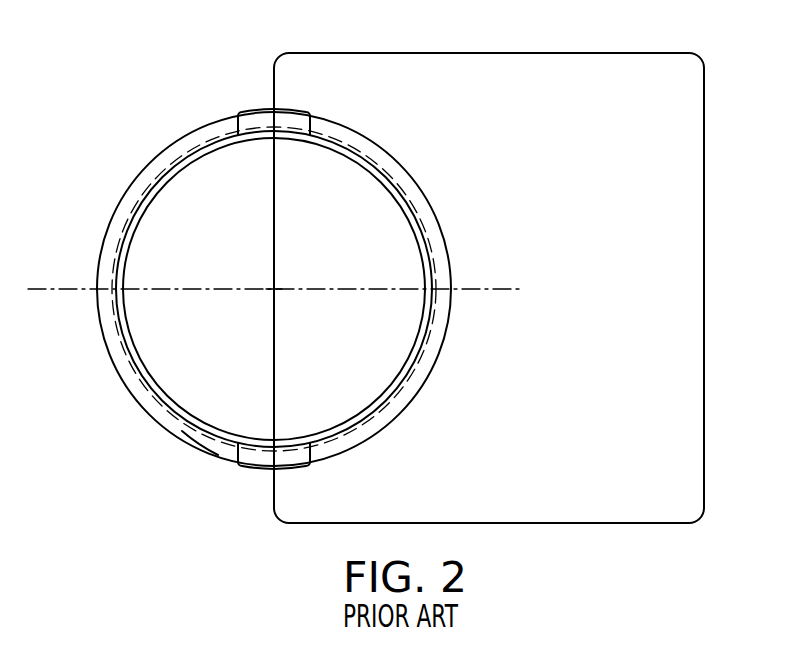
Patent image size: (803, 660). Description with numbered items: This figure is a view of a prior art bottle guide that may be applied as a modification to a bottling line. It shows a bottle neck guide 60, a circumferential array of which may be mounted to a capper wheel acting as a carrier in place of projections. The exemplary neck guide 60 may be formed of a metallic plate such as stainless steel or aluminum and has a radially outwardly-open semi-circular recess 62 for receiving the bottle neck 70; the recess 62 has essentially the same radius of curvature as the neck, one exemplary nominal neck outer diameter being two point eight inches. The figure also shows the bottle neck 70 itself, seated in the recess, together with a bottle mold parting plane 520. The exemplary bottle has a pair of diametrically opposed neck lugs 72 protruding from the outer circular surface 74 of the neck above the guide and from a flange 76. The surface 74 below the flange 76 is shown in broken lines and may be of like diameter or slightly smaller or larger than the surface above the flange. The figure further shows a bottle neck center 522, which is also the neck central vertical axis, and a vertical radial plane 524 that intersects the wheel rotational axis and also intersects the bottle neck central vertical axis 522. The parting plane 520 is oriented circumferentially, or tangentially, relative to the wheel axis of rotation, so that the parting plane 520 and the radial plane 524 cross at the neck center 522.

The bottle neck guide 60 is at (673, 450).
The bottle neck 70 is at (155, 440).
The neck lugs 72 is at (252, 107).
The outer circular surface 74 is at (165, 171).
The flange 76 is at (205, 450).
The semi-circular recess 62 is at (400, 367).
The bottle mold parting plane 520 is at (272, 362).
The bottle neck center 522 is at (275, 288).
The vertical radial plane 524 is at (190, 288).